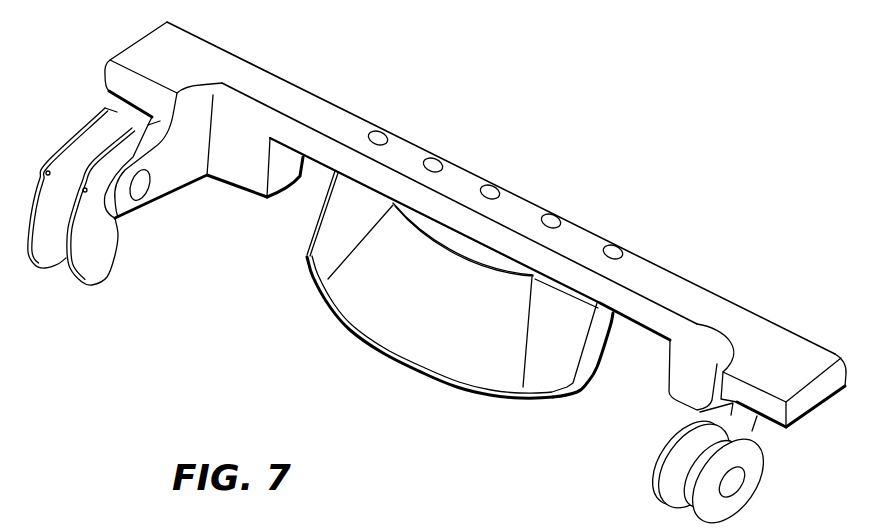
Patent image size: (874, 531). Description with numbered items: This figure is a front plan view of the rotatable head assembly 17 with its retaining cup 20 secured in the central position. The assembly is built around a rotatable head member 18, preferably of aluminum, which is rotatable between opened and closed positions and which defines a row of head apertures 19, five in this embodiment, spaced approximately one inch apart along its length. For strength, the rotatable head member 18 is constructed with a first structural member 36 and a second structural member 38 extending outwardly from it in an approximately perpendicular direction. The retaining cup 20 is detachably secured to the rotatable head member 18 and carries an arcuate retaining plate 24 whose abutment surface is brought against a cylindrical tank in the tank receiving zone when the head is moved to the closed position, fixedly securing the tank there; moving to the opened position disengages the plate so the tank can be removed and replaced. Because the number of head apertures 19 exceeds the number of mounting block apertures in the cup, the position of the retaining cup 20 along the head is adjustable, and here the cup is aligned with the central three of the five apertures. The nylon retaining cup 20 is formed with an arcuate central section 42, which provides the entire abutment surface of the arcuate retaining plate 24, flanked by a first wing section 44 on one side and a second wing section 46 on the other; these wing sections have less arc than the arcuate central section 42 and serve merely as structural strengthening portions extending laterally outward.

The rotatable head assembly 17 is at (143, 44).
The rotatable head member 18 is at (750, 462).
The head apertures 19 is at (618, 247).
The retaining cup 20 is at (424, 318).
The arcuate retaining plate 24 is at (487, 397).
The first structural member 36 is at (680, 292).
The second structural member 38 is at (648, 323).
The arcuate central section 42 is at (428, 357).
The first wing section 44 is at (325, 272).
The second wing section 46 is at (549, 378).